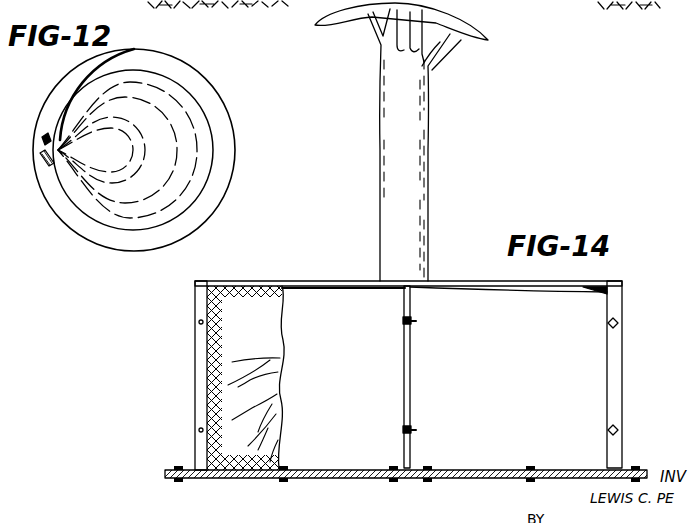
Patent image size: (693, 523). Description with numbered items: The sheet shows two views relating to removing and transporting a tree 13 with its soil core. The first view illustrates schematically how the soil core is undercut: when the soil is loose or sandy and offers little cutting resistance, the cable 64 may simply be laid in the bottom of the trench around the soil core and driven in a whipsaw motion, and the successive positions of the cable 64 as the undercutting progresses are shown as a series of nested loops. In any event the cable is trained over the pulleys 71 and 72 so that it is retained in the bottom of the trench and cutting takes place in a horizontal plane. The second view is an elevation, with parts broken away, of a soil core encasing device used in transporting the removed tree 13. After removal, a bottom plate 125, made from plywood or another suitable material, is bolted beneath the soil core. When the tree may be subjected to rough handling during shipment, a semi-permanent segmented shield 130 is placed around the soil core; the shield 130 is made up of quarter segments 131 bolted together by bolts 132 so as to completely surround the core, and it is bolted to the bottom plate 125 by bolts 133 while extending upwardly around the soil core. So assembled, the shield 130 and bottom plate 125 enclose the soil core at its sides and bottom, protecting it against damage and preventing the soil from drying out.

In FIG. 12, the cable 64 is at (197, 148).
In FIG. 12, the pulley 72 is at (44, 140).
In FIG. 12, the pulley 71 is at (46, 165).
In FIG. 14, the tree 13 is at (437, 128).
In FIG. 14, the quarter segments 131 is at (333, 291).
In FIG. 14, the bolts 132 is at (411, 321).
In FIG. 14, the semi-permanent segmented shield 130 is at (602, 397).
In FIG. 14, the bolts 133 is at (178, 468).
In FIG. 14, the bottom plate 125 is at (251, 478).